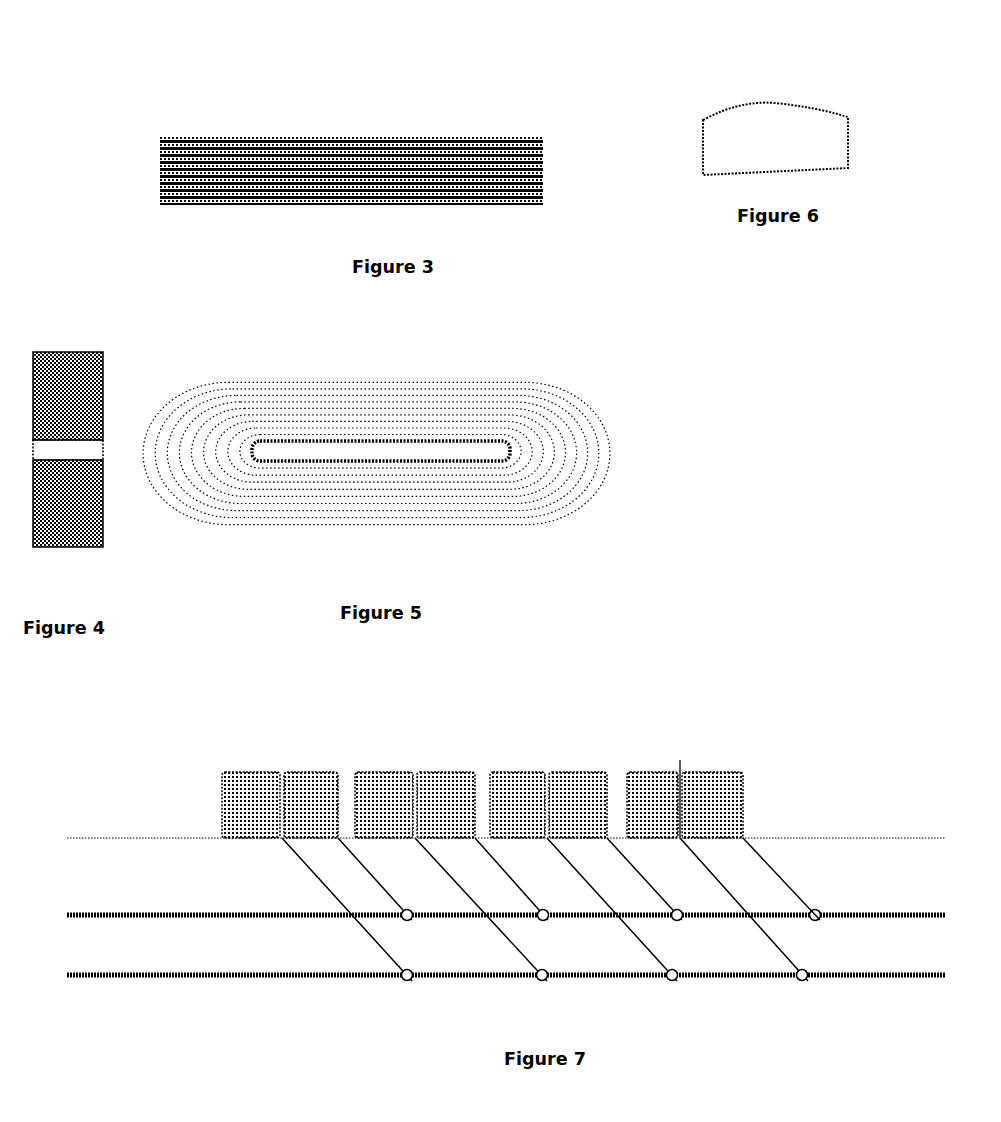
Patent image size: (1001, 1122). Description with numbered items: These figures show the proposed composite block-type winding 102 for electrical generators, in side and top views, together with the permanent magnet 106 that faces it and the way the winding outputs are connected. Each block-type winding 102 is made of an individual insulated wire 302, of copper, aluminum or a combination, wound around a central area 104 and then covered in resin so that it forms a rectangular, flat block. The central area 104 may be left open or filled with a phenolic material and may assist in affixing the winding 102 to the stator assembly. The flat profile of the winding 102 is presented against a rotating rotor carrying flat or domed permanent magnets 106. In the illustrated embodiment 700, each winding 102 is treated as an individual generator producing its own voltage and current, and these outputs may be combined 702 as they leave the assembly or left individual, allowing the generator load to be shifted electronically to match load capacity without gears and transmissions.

In FIG. 3, the block-type winding 102 is at (332, 113).
In FIG. 4, the block-type winding 102 is at (70, 390).
In FIG. 5, the block-type winding 102 is at (393, 408).
In FIG. 7, the block-type winding 102 is at (280, 770).
In FIG. 4, the central area 104 is at (98, 445).
In FIG. 5, the central area 104 is at (475, 450).
In FIG. 6, the permanent magnet 106 is at (822, 128).
In FIG. 3, the insulated wire 302 is at (493, 152).
In FIG. 7, the embodiment 700 is at (657, 725).
In FIG. 7, the combined output 702 is at (770, 860).